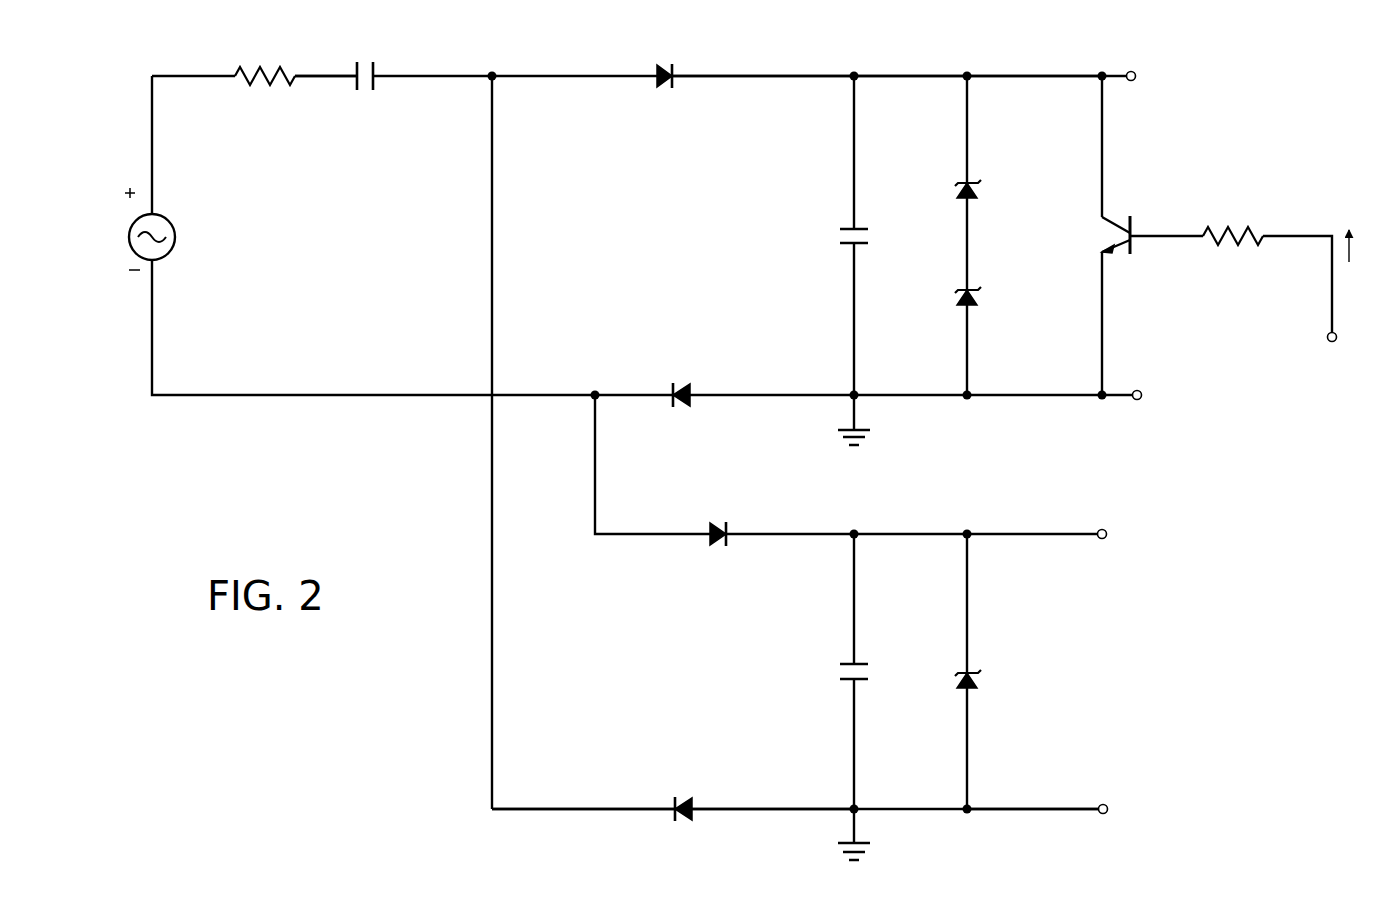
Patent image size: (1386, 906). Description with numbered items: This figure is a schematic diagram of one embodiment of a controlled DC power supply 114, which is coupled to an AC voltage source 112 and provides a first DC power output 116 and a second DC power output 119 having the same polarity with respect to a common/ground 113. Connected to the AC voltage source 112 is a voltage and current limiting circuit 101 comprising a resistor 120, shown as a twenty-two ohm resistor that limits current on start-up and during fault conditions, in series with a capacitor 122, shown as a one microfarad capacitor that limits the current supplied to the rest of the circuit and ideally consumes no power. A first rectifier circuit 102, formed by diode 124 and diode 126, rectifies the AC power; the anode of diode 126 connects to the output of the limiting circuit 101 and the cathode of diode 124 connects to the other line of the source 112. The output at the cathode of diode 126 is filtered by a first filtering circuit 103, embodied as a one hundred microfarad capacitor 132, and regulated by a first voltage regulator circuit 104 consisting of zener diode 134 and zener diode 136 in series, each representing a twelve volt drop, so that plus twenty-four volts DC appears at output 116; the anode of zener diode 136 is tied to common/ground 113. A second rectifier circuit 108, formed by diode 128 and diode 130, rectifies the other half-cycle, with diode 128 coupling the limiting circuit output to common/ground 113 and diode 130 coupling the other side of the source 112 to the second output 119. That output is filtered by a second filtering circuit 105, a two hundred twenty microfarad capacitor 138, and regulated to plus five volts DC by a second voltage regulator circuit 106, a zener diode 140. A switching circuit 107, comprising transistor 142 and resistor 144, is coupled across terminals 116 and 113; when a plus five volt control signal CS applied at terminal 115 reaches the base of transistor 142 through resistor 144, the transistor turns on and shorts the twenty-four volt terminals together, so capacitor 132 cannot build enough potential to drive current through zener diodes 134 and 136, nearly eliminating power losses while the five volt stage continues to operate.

The voltage and current limiting circuit 101 is at (304, 66).
The first rectifier circuit 102 is at (717, 66).
The first filtering circuit 103 is at (898, 66).
The first voltage regulator circuit 104 is at (1041, 66).
The second filtering circuit 105 is at (800, 820).
The second voltage regulator circuit 106 is at (969, 820).
The switching circuit 107 is at (1235, 184).
The second rectifier circuit 108 is at (647, 820).
The AC voltage source 112 is at (136, 215).
The common/ground 113 is at (1142, 392).
The DC power supply 114 is at (440, 601).
The terminal 115 is at (1331, 342).
The first DC power output 116 is at (1134, 82).
The second DC power output 119 is at (1104, 540).
The resistor 120 is at (268, 87).
The capacitor 122 is at (356, 88).
The diode 124 is at (680, 400).
The diode 126 is at (661, 85).
The diode 128 is at (670, 815).
The diode 130 is at (722, 542).
The capacitor 132 is at (848, 246).
The zener diode 134 is at (980, 185).
The zener diode 136 is at (980, 292).
The capacitor 138 is at (860, 660).
The zener diode 140 is at (980, 676).
The transistor 142 is at (1133, 245).
The resistor 144 is at (1236, 240).